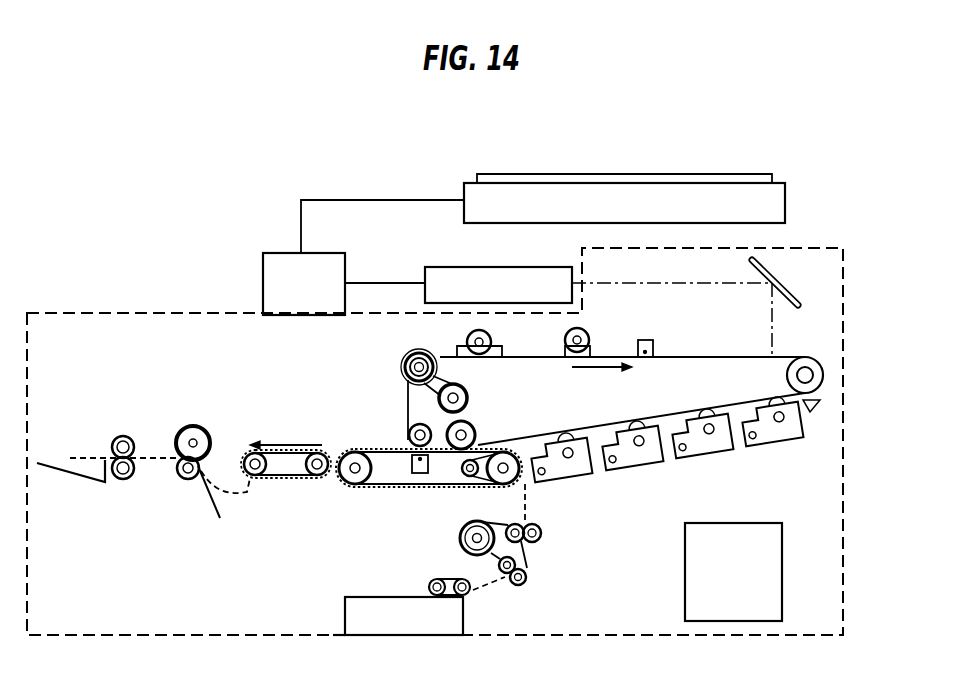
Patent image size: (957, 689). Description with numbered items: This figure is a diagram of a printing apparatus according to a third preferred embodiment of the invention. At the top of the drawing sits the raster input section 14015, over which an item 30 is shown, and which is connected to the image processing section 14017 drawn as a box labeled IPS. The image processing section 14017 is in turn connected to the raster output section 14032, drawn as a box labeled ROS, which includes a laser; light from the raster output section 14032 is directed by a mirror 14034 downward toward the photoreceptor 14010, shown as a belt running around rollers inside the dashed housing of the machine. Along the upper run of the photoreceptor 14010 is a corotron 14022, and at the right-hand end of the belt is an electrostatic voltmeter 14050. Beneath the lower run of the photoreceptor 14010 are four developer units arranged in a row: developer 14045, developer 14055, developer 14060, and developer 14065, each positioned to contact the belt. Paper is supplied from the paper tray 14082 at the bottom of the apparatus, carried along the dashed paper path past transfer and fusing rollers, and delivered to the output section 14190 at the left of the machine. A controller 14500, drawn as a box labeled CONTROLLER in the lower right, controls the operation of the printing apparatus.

The original document 30 is at (755, 178).
The raster input section 14015 is at (464, 183).
The image processing section 14017 is at (270, 253).
The raster output section 14032 is at (475, 267).
The mirror 14034 is at (770, 272).
The corotron 14022 is at (646, 337).
The photoreceptor 14010 is at (500, 358).
The electrostatic voltmeter 14050 is at (808, 408).
The developer 14045 is at (557, 488).
The developer 14055 is at (631, 474).
The developer 14060 is at (701, 463).
The developer 14065 is at (772, 452).
The output section 14190 is at (63, 474).
The paper tray 14082 is at (389, 637).
The controller 14500 is at (685, 582).